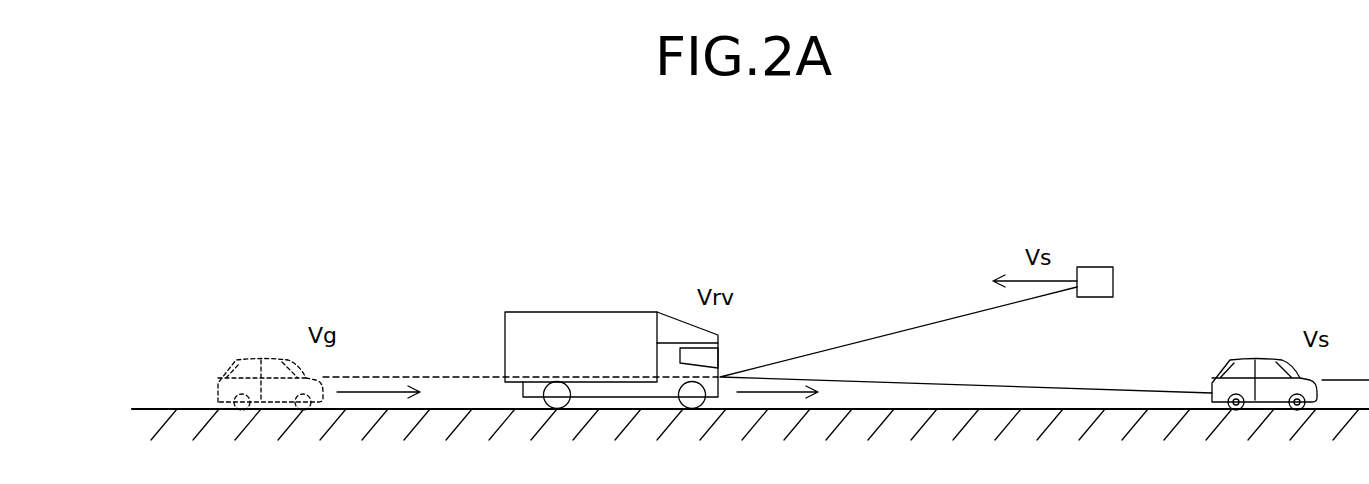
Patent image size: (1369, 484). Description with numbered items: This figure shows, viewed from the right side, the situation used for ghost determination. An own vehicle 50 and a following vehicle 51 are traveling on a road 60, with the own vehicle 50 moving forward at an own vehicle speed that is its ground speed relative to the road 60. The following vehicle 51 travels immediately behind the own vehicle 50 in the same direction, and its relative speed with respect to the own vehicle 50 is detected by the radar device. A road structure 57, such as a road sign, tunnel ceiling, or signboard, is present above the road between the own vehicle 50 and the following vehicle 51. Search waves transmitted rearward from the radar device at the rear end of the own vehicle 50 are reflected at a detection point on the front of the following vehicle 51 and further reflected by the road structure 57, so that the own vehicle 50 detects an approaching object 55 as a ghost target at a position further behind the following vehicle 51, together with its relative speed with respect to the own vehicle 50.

The own vehicle 50 is at (1262, 360).
The following vehicle 51 is at (557, 312).
The approaching object 55 is at (230, 361).
The road structure 57 is at (1097, 266).
The road 60 is at (142, 425).